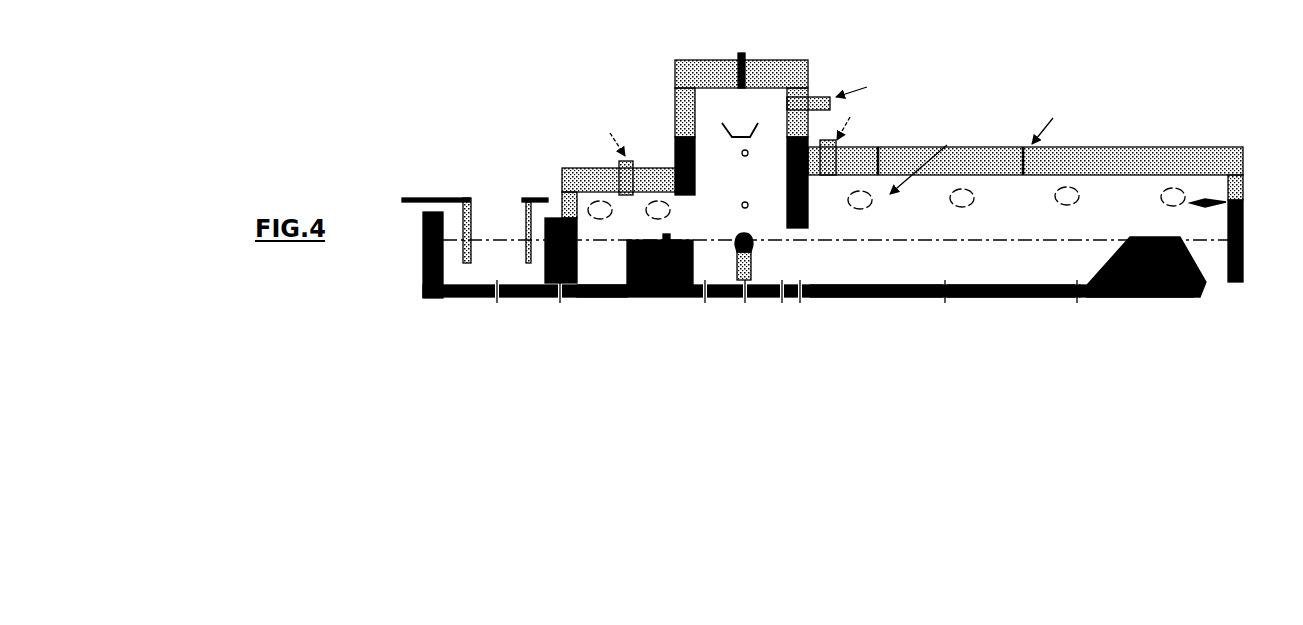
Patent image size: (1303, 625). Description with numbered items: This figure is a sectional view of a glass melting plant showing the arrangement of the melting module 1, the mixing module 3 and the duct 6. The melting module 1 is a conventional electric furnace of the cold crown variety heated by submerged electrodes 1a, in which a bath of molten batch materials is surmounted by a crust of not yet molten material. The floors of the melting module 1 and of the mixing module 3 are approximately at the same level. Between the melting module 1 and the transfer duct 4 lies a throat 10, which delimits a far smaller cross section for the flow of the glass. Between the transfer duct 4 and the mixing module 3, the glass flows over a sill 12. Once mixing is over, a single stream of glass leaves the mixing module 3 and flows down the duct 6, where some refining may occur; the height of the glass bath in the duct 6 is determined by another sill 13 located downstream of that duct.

The melting module 1 is at (483, 322).
The submerged electrodes 1a is at (444, 190).
The throat 10 is at (555, 312).
The transfer duct 4 is at (615, 326).
The sill 12 is at (662, 326).
The mixing module 3 is at (745, 326).
The duct 6 is at (960, 324).
The sill 13 is at (1165, 310).